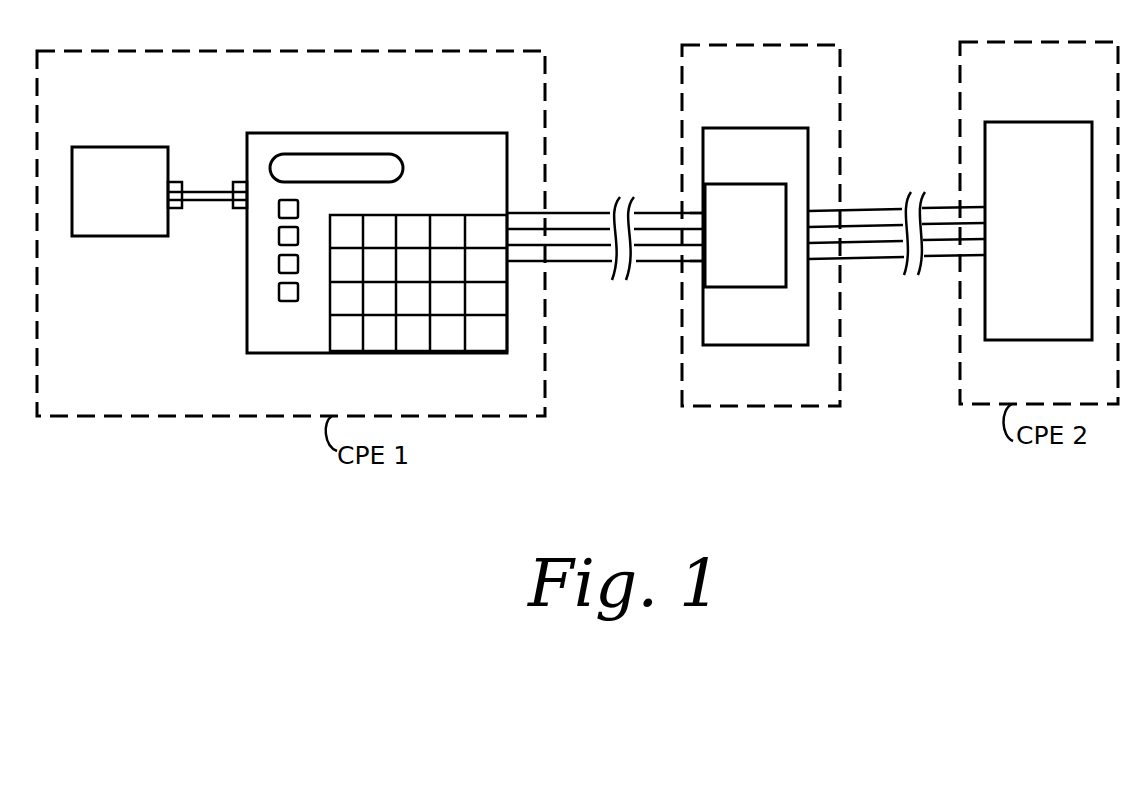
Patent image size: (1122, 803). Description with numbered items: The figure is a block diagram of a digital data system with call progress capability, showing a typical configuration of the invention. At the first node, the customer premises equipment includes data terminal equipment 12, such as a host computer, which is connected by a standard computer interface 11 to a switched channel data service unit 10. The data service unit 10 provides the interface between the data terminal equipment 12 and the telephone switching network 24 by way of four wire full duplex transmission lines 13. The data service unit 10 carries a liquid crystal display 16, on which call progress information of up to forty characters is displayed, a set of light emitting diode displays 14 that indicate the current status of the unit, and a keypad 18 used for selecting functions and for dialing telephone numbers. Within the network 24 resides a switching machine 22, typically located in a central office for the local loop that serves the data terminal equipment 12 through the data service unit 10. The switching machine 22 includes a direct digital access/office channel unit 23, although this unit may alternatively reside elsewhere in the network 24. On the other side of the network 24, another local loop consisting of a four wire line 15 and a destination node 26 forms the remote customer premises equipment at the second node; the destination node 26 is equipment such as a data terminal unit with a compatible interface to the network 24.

The switched channel data service unit 10 is at (306, 353).
The standard computer interface 11 is at (205, 183).
The data terminal equipment 12 is at (120, 237).
The four wire full duplex transmission lines 13 is at (571, 153).
The light emitting diode displays 14 is at (270, 267).
The four wire line 15 is at (875, 158).
The liquid crystal display 16 is at (323, 155).
The keypad 18 is at (443, 214).
The switching machine 22 is at (752, 128).
The direct digital access/office channel unit 23 is at (705, 273).
The network 24 is at (740, 406).
The destination node 26 is at (1018, 340).